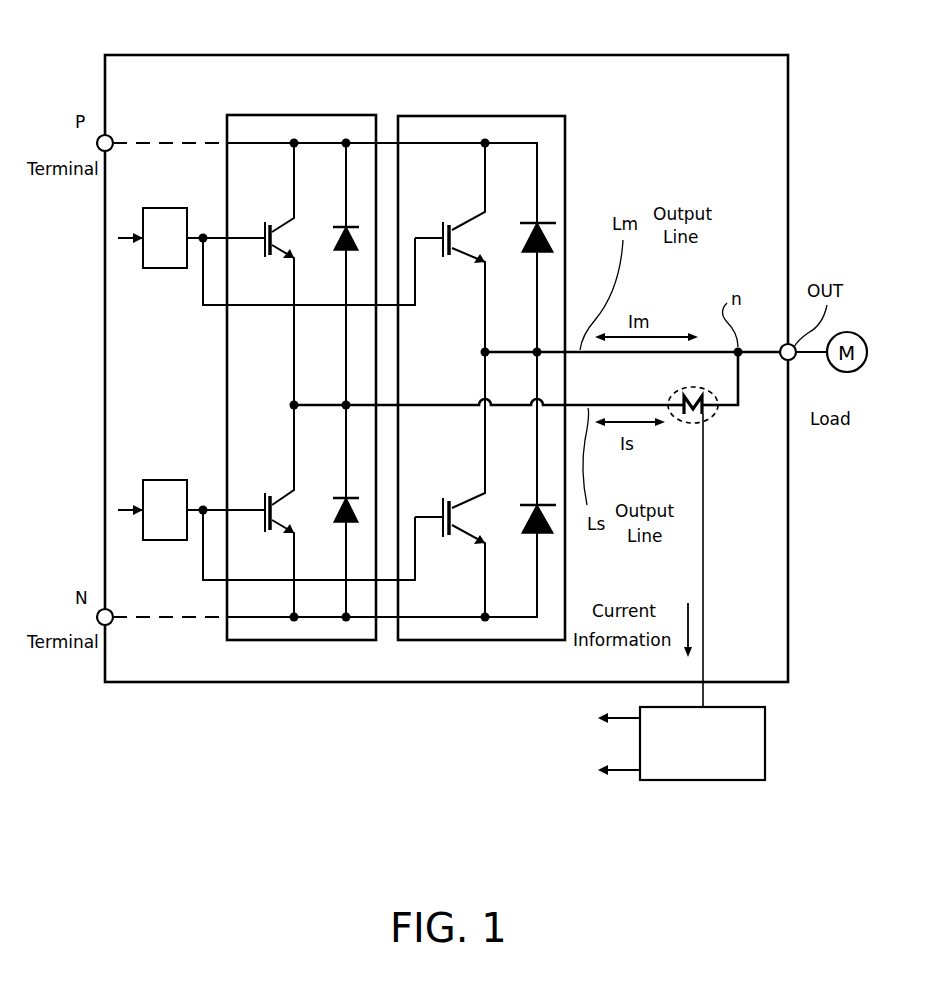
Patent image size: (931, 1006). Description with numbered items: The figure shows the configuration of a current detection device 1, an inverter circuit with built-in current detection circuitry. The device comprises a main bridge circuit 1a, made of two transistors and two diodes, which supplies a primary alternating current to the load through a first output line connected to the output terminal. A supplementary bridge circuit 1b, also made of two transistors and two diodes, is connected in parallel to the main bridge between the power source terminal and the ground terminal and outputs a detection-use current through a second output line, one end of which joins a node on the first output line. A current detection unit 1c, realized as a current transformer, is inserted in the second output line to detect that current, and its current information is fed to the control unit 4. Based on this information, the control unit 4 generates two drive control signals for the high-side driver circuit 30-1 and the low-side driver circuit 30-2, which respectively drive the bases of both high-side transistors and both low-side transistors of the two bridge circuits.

The current detection device 1 is at (627, 55).
The bridge circuit 1a is at (430, 116).
The bridge circuit 1b is at (257, 115).
The current detection unit 1c is at (707, 420).
The control unit 4 is at (722, 780).
The driver circuit 30-1 is at (170, 208).
The driver circuit 30-2 is at (187, 458).